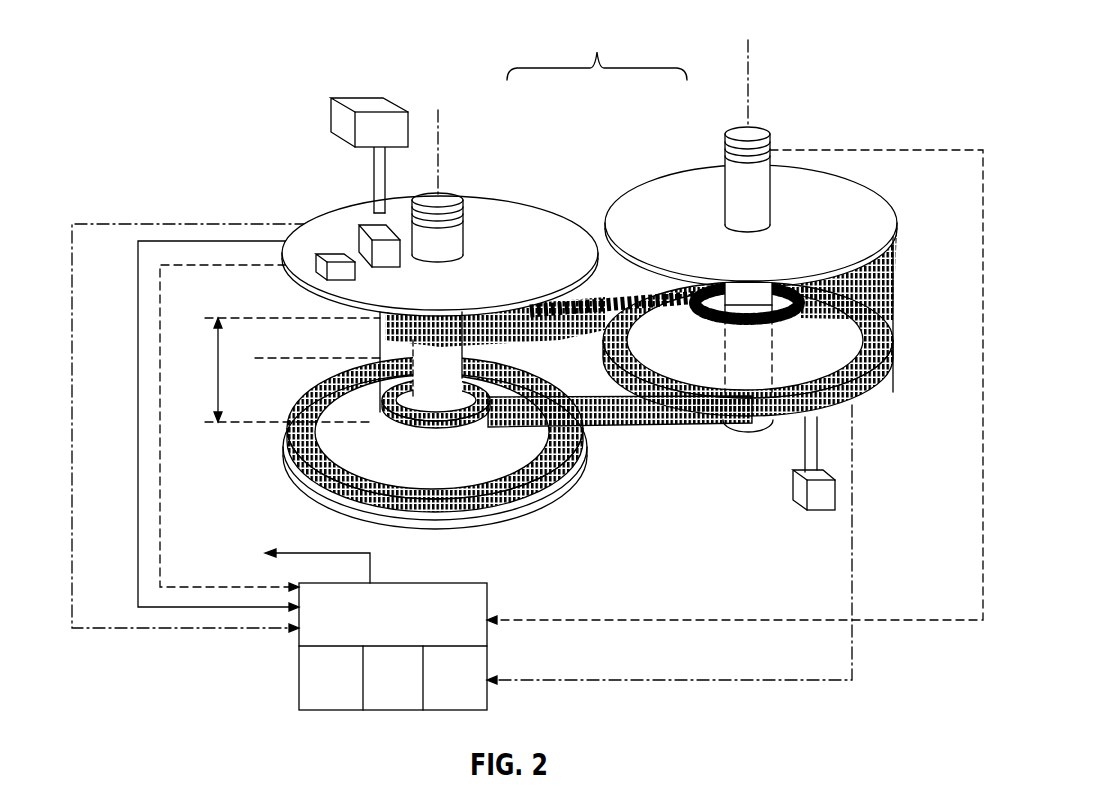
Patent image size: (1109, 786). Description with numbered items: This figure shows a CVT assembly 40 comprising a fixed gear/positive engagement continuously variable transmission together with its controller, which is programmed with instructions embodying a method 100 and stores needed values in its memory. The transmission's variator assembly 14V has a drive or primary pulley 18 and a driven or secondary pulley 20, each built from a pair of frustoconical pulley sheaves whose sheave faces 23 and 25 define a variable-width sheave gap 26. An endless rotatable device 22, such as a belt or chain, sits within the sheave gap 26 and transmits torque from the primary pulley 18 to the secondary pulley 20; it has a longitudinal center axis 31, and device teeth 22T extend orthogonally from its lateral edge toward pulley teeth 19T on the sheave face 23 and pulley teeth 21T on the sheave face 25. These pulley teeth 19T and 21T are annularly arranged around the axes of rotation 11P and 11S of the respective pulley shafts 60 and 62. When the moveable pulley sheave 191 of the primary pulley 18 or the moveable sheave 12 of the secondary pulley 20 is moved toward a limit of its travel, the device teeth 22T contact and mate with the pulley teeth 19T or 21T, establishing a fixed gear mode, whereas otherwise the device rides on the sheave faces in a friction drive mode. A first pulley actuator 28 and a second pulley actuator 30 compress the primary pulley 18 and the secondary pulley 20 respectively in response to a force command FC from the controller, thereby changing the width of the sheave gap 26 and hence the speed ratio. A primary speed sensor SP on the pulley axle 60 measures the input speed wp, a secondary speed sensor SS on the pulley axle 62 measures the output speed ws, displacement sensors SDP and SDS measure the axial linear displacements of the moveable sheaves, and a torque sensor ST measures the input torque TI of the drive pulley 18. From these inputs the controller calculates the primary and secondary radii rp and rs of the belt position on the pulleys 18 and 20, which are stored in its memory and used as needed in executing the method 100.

The moveable pulley sheave 12 is at (872, 452).
The variator assembly 14V is at (597, 46).
The drive/primary pulley 18 is at (185, 160).
The moveable pulley sheave 191 is at (330, 192).
The driven/secondary pulley 20 is at (896, 200).
The axis of rotation 11P is at (440, 135).
The axis of rotation 11S is at (750, 70).
The first pulley actuator 28 is at (357, 97).
The second pulley actuator 30 is at (806, 508).
The pulley axle 60 is at (452, 250).
The pulley axle 62 is at (725, 163).
The pulley teeth 19T is at (530, 366).
The pulley teeth 21T is at (855, 300).
The endless rotatable device 22 is at (895, 340).
The device teeth 22T is at (604, 421).
The sheave face 23 is at (440, 484).
The sheave face 25 is at (845, 352).
The sheave gap 26 is at (216, 370).
The longitudinal center axis 31 is at (303, 357).
The CVT assembly 40 is at (676, 26).
The method 100 is at (352, 692).
The primary speed sensor SP is at (455, 207).
The secondary speed sensor SS is at (738, 168).
The torque sensor ST is at (343, 281).
The first displacement sensor SDP is at (393, 270).
The second displacement sensor SDS is at (855, 407).
The input torque TI is at (162, 490).
The clamping force FC is at (346, 552).
The primary radius rp is at (138, 560).
The secondary radius rs is at (563, 620).
The input speed wp is at (108, 630).
The output speed ws is at (568, 680).